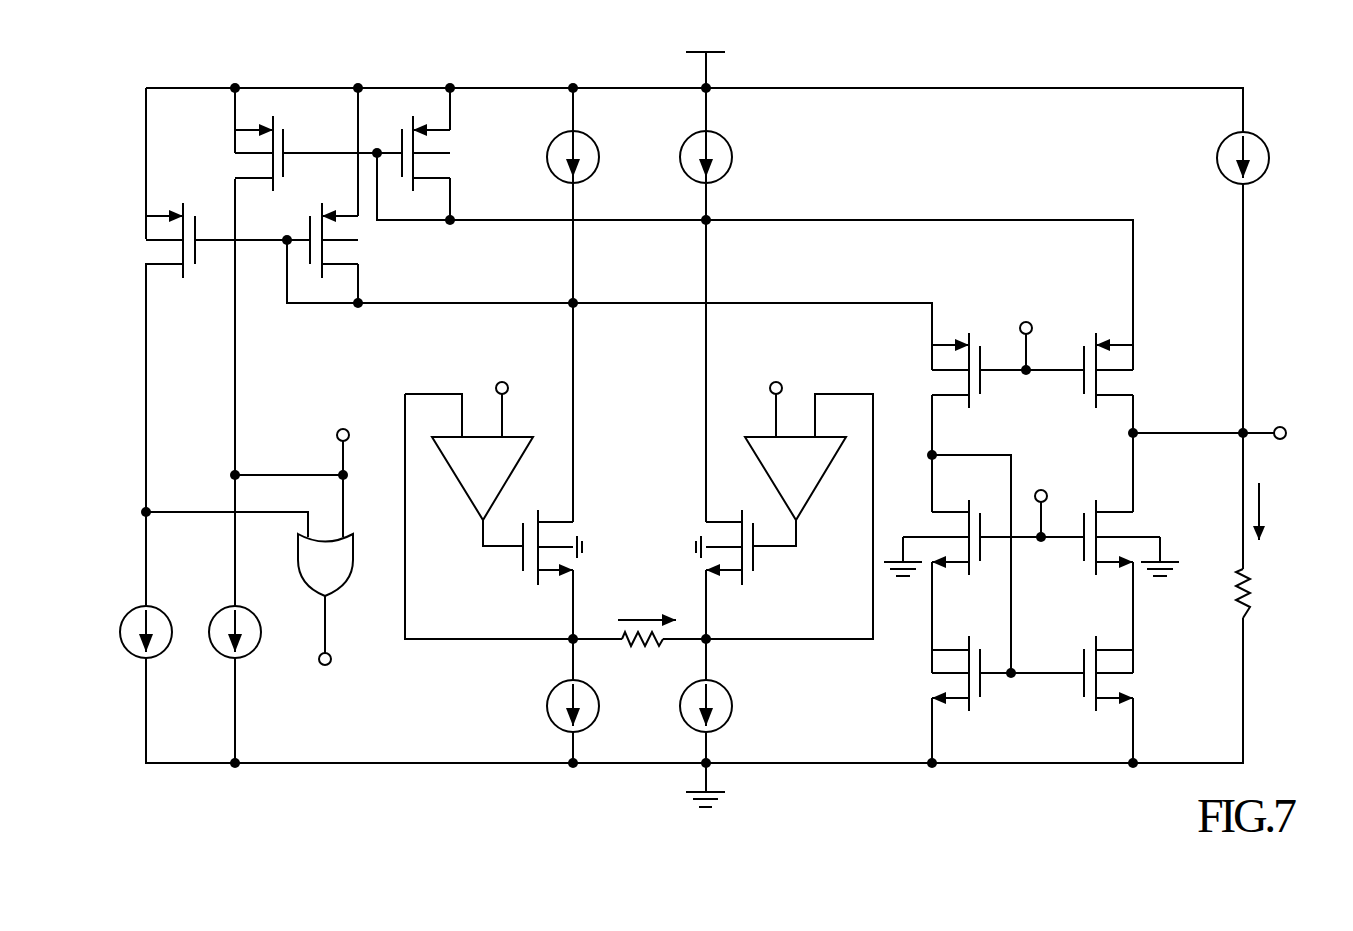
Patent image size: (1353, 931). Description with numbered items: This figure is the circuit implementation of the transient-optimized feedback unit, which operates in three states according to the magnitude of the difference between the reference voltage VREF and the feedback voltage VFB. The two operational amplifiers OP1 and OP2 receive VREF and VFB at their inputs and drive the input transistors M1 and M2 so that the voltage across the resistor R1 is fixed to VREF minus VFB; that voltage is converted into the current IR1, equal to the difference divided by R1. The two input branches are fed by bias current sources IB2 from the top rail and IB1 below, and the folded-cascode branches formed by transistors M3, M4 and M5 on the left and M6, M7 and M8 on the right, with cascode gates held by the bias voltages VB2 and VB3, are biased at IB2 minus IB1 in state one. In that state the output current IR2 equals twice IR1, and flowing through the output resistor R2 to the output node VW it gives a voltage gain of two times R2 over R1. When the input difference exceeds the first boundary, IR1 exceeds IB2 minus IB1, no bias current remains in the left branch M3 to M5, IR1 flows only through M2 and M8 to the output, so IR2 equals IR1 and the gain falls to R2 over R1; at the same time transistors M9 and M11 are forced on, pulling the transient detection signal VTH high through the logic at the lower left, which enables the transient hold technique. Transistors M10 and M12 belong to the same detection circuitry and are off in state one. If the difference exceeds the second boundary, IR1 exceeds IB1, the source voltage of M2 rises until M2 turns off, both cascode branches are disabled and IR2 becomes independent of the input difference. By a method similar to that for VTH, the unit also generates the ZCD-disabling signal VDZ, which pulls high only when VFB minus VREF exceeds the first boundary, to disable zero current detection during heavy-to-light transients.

The transistor M1 is at (539, 557).
The transistor M2 is at (740, 557).
The transistor M3 is at (979, 354).
The transistor M4 is at (972, 522).
The transistor M5 is at (971, 692).
The transistor M6 is at (1072, 692).
The transistor M7 is at (1100, 522).
The transistor M8 is at (1079, 354).
The transistor M9 is at (343, 244).
The transistor M10 is at (438, 153).
The transistor M11 is at (216, 256).
The transistor M12 is at (284, 153).
The operational amplifier OP1 is at (482, 478).
The operational amplifier OP2 is at (795, 478).
The resistor R1 is at (642, 654).
The resistor R2 is at (1258, 593).
The bias current IB1 is at (657, 706).
The bias current IB2 is at (657, 157).
The current IR1 is at (647, 608).
The output current IR2 is at (1275, 511).
The reference voltage VREF is at (514, 373).
The feedback voltage VFB is at (783, 373).
The bias voltage VB2 is at (1032, 313).
The bias voltage VB3 is at (1046, 480).
The ZCD-disabling signal VDZ is at (351, 420).
The transient detection signal VTH is at (334, 677).
The output voltage VW is at (1301, 435).